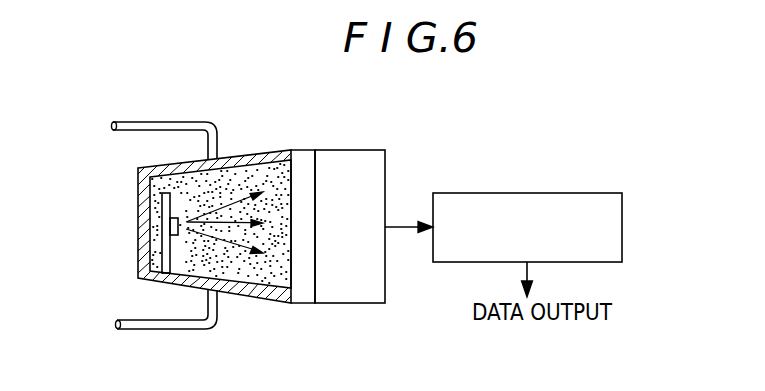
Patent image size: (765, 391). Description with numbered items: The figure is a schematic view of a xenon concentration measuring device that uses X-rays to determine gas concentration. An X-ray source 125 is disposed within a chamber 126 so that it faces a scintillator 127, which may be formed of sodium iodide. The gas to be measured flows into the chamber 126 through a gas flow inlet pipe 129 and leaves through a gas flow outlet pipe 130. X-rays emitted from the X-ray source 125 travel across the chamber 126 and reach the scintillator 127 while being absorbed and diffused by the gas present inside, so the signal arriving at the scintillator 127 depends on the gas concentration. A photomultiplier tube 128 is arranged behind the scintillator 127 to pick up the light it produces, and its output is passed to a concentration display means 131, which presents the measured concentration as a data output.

The X-ray source 125 is at (172, 227).
The chamber 126 is at (246, 178).
The scintillator 127 is at (298, 162).
The photomultiplier tube 128 is at (348, 165).
The gas flow inlet pipe 129 is at (152, 331).
The gas flow outlet pipe 130 is at (168, 122).
The concentration display means 131 is at (516, 193).